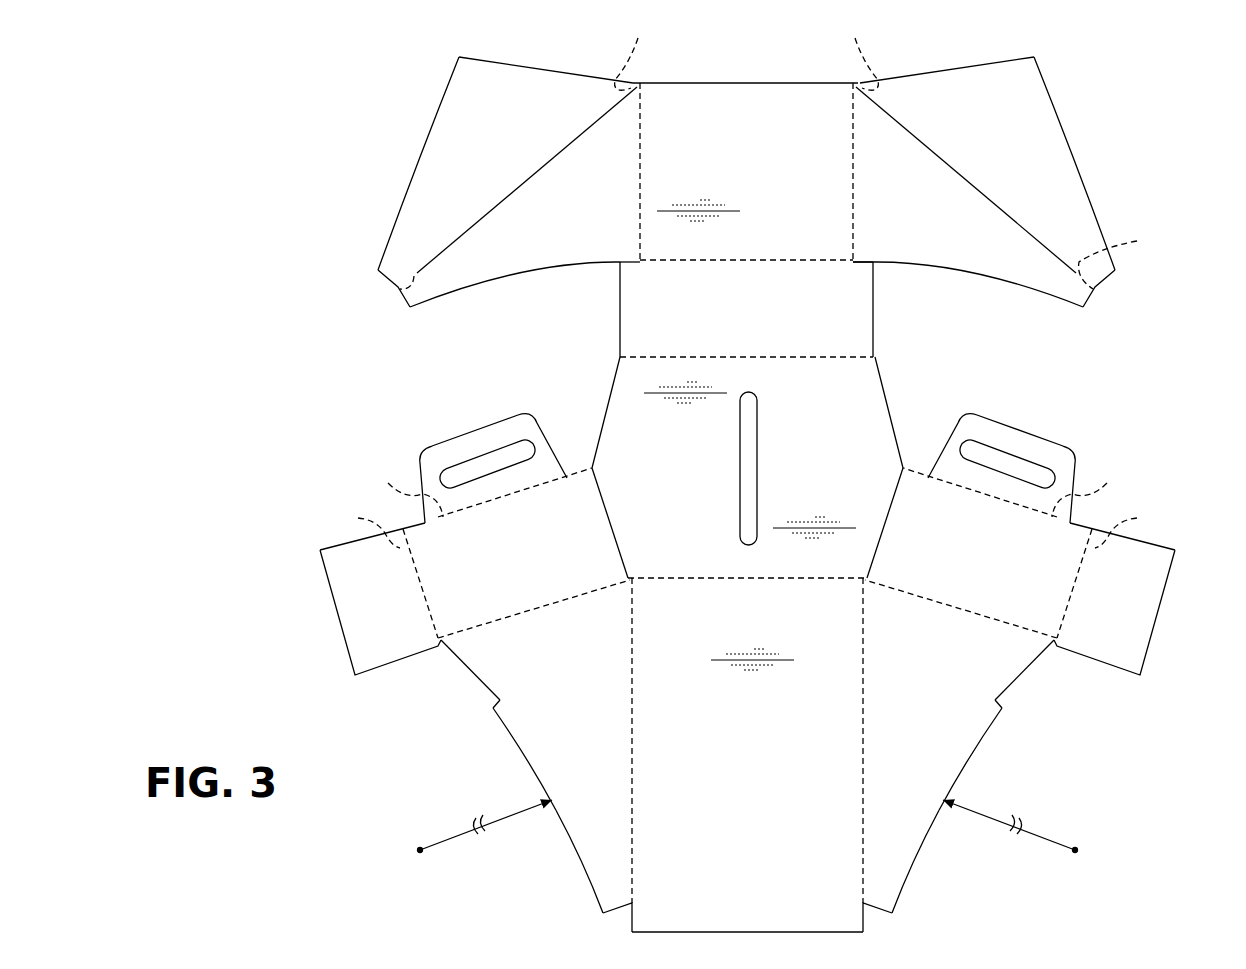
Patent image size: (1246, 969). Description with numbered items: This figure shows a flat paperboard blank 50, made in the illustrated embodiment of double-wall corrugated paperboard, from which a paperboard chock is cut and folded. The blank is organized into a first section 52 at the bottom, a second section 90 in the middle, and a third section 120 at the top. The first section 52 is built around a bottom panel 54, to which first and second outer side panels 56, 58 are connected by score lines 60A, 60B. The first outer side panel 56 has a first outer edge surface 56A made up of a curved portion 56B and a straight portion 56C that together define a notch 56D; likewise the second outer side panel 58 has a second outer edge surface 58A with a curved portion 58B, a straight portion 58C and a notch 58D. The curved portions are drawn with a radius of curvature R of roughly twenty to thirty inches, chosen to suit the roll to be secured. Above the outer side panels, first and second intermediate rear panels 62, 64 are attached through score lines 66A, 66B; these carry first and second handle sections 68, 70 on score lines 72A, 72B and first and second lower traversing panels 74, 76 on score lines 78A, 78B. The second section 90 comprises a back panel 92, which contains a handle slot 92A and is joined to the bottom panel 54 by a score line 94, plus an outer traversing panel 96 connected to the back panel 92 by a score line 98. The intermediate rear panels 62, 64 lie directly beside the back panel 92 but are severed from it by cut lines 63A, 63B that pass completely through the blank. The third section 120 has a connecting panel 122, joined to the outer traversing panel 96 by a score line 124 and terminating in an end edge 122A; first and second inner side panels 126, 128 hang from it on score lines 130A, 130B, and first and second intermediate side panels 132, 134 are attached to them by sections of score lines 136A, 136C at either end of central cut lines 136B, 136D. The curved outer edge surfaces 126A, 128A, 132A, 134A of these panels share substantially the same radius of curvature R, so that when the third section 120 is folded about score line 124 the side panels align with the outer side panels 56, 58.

The paperboard blank 50 is at (1167, 168).
The first section 52 is at (413, 758).
The bottom panel 54 is at (747, 790).
The first outer side panel 56 is at (595, 805).
The first outer edge surface 56A is at (573, 850).
The curved portion 56B is at (517, 745).
The straight portion 56C is at (453, 655).
The notch 56D is at (490, 702).
The second outer side panel 58 is at (900, 807).
The second outer edge surface 58A is at (945, 868).
The curved portion 58B is at (994, 759).
The straight portion 58C is at (1045, 680).
The notch 58D is at (1031, 726).
The score line 60A is at (633, 847).
The score line 60B is at (832, 740).
The first intermediate rear panel 62 is at (515, 515).
The cut line 63A is at (610, 515).
The cut line 63B is at (871, 523).
The second intermediate rear panel 64 is at (980, 517).
The score line 66A is at (553, 603).
The score line 66B is at (961, 598).
The first handle section 68 is at (475, 438).
The second handle section 70 is at (1001, 446).
The score line 72A is at (403, 488).
The score line 72B is at (1090, 488).
The first lower traversing panel 74 is at (380, 599).
The second lower traversing panel 76 is at (1114, 599).
The score line 78A is at (376, 573).
The score line 78B is at (1117, 573).
The second section 90 is at (888, 333).
The back panel 92 is at (747, 447).
The handle slot 92A is at (762, 468).
The score line 94 is at (790, 585).
The outer traversing panel 96 is at (746, 309).
The score line 98 is at (687, 357).
The third section 120 is at (397, 190).
The connecting panel 122 is at (711, 191).
The end edge 122A is at (753, 82).
The score line 124 is at (802, 260).
The first inner side panel 126 is at (509, 254).
The curved outer edge surface 126A is at (520, 273).
The second inner side panel 128 is at (984, 254).
The curved outer edge surface 128A is at (953, 272).
The score line 130A is at (642, 173).
The score line 130B is at (853, 157).
The first intermediate side panel 132 is at (546, 97).
The curved outer edge surface 132A is at (400, 237).
The second intermediate side panel 134 is at (947, 95).
The curved outer edge surface 134A is at (1068, 145).
The score lines 136A is at (373, 327).
The cut line 136B is at (492, 207).
The score lines 136C is at (1011, 153).
The cut line 136D is at (1010, 217).
The radius of curvature R is at (453, 842).